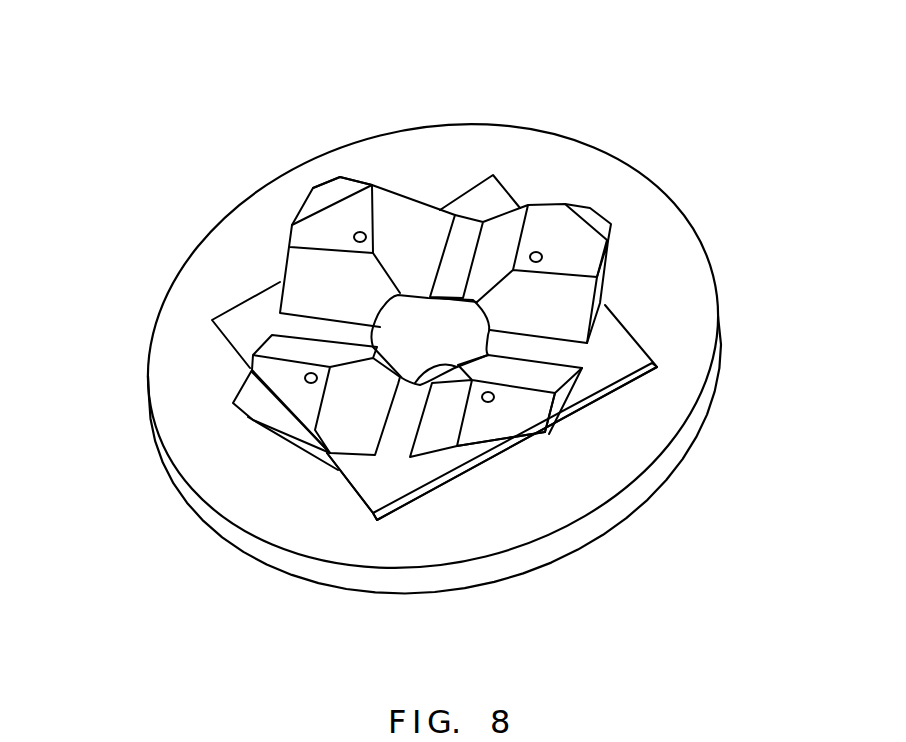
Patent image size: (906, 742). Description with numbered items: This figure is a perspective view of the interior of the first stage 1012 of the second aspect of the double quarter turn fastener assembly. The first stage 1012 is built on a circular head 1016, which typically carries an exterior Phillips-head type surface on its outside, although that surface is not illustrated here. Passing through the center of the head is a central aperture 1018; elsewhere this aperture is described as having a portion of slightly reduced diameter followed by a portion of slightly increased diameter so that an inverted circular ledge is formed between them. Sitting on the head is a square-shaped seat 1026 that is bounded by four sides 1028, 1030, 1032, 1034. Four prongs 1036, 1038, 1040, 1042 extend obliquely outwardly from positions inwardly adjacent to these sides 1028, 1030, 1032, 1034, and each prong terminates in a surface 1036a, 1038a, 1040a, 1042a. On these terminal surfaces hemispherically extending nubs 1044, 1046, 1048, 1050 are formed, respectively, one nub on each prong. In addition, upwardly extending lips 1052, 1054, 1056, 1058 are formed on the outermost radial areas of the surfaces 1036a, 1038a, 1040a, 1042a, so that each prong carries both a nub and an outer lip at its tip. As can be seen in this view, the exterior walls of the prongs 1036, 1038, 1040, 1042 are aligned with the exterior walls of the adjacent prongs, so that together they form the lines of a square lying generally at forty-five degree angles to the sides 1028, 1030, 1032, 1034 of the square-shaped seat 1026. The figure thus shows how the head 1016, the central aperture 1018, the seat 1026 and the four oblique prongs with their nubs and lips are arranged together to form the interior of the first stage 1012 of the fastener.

The first stage 1012 is at (768, 109).
The circular head 1016 is at (710, 418).
The central aperture 1018 is at (470, 330).
The square-shaped seat 1026 is at (377, 521).
The side 1028 is at (450, 474).
The side 1030 is at (623, 322).
The side 1032 is at (473, 200).
The side 1034 is at (347, 473).
The prong 1036 is at (592, 412).
The surface 1036a is at (583, 403).
The prong 1038 is at (580, 216).
The surface 1038a is at (578, 252).
The prong 1040 is at (293, 225).
The surface 1040a is at (327, 242).
The prong 1042 is at (293, 432).
The surface 1042a is at (262, 372).
The hemispherically extending nub 1044 is at (494, 401).
The hemispherically extending nub 1046 is at (536, 251).
The hemispherically extending nub 1048 is at (362, 232).
The hemispherically extending nub 1050 is at (307, 440).
The upwardly extending lip 1052 is at (533, 438).
The upwardly extending lip 1054 is at (606, 209).
The upwardly extending lip 1056 is at (335, 177).
The upwardly extending lip 1058 is at (311, 384).